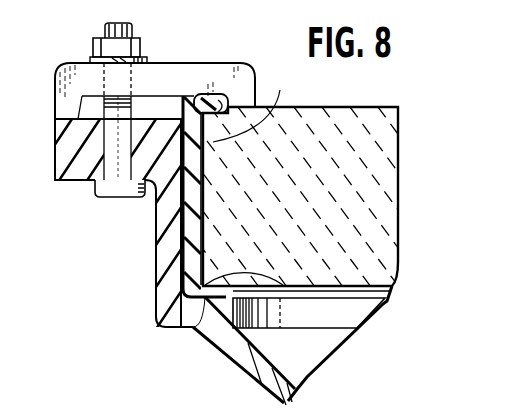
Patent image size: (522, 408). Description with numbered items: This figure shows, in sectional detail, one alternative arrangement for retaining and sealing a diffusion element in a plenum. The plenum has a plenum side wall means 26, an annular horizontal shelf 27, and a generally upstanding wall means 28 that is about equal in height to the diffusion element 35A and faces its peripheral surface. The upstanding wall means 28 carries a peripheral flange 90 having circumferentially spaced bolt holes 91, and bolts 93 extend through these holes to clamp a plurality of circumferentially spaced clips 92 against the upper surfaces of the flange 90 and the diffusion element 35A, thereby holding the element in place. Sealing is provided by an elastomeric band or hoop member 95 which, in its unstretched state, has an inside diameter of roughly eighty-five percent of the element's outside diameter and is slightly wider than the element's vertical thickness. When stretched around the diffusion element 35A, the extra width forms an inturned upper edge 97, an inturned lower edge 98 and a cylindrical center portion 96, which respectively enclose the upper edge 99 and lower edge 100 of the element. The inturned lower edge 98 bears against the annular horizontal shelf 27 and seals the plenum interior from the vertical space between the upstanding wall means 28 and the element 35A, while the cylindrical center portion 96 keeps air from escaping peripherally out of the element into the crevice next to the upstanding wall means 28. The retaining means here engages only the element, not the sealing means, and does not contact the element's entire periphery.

The plenum side wall means 26 is at (318, 350).
The annular horizontal shelf 27 is at (212, 332).
The generally upstanding wall means 28 is at (160, 247).
The diffusion element 35A is at (313, 128).
The peripheral flange 90 is at (65, 155).
The bolt holes 91 is at (108, 155).
The clips 92 is at (160, 63).
The bolts 93 is at (112, 24).
The elastomeric band or hoop member 95 is at (183, 271).
The cylindrical center portion 96 is at (254, 111).
The inturned upper edge 97 is at (196, 94).
The inturned lower edge 98 is at (190, 300).
The upper edge of the element 99 is at (226, 96).
The lower edge of the element 100 is at (275, 276).